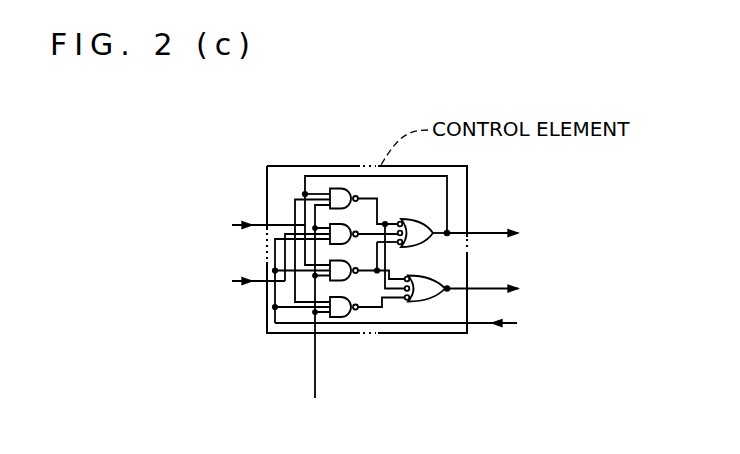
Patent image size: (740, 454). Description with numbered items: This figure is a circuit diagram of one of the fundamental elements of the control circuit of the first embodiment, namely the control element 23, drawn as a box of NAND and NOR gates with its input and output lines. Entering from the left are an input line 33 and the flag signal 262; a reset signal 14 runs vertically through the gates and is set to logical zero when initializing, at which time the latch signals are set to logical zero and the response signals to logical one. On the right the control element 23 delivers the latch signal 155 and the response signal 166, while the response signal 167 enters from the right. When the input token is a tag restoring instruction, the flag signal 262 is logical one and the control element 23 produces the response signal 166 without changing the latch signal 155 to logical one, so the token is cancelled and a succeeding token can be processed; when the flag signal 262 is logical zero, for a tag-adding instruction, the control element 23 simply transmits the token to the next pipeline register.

The control element 23 is at (327, 166).
The input signal line 33 is at (237, 225).
The flag signal 262 is at (237, 281).
The reset signal 14 is at (317, 368).
The latch signal 155 is at (490, 231).
The response signal 166 is at (497, 285).
The response signal 167 is at (508, 323).